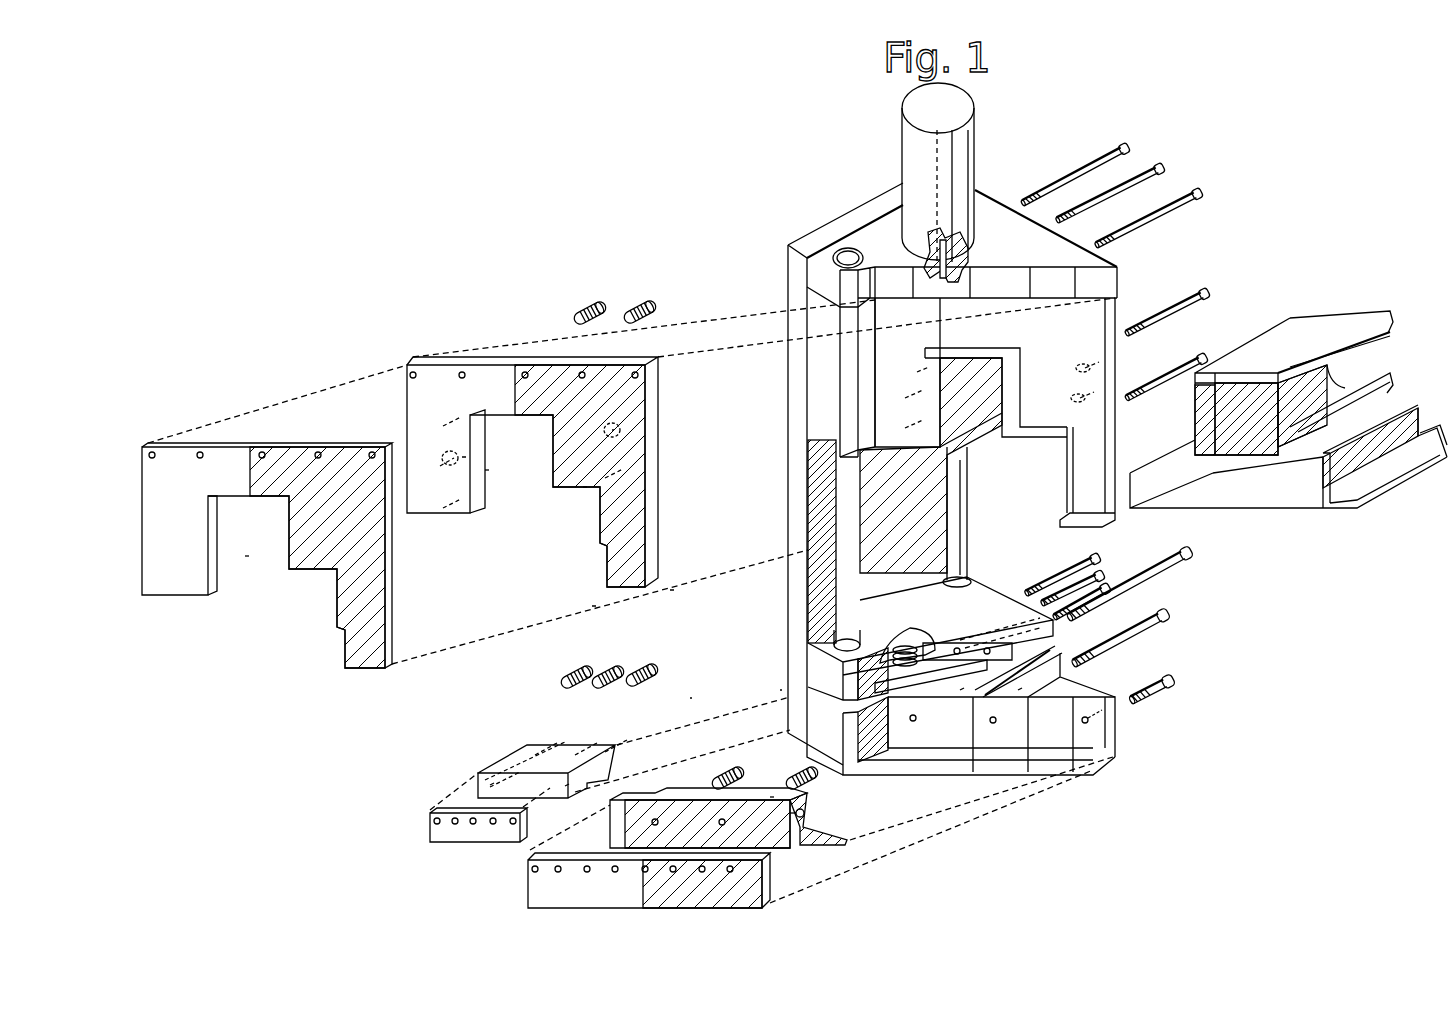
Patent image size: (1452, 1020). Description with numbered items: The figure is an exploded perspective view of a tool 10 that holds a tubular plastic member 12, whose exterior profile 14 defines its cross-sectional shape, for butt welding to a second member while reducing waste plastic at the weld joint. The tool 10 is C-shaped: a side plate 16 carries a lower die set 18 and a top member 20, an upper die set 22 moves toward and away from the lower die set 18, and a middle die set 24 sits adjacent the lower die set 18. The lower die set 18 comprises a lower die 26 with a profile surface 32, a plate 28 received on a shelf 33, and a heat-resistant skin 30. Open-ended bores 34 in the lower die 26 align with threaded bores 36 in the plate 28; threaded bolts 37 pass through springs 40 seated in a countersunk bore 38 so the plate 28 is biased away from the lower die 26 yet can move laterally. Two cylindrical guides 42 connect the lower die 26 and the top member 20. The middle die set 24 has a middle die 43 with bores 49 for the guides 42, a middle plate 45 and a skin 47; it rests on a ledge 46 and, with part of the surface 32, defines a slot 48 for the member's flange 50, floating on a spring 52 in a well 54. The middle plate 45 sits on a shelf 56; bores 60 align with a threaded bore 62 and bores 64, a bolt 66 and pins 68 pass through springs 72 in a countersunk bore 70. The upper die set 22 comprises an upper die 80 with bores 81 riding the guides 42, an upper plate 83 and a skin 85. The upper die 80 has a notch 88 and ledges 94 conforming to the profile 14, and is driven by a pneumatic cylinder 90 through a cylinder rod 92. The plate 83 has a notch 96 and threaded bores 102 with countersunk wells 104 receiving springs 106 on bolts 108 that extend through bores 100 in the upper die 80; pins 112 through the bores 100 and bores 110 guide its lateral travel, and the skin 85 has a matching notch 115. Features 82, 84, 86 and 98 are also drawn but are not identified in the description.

The tool 10 is at (657, 250).
The plastic member 12 is at (1300, 500).
The exterior profile 14 is at (1195, 428).
The side plate 16 is at (790, 595).
The lower die set 18 is at (689, 698).
The top member 20 is at (890, 230).
The upper die set 22 is at (593, 606).
The middle die set 24 is at (779, 690).
The lower die 26 is at (1113, 763).
The plate 28 is at (850, 842).
The skin 30 is at (765, 888).
The profile surface 32 is at (1062, 685).
The shelf 33 is at (1118, 738).
The open-ended bores 34 is at (1085, 724).
The threaded bores 36 is at (722, 818).
The threaded bolts 37 is at (1183, 557).
The countersunk bore 38 is at (770, 782).
The spring 40 is at (726, 772).
The elongate guides 42 is at (958, 575).
The middle die 43 is at (920, 600).
The middle plate 45 is at (598, 770).
The ledge 46 is at (962, 690).
The skin 47 is at (462, 832).
The slot 48 is at (1045, 640).
The bores 49 is at (958, 578).
The laterally extending flange 50 is at (1180, 505).
The spring 52 is at (907, 638).
The well 54 is at (845, 656).
The shelf 56 is at (1020, 690).
The open-ended bores 60 is at (992, 598).
The threaded bore 62 is at (521, 760).
The bores 64 is at (490, 770).
The bolt 66 is at (1097, 575).
The pins 68 is at (1090, 558).
The countersunk bore 70 is at (605, 748).
The spring 72 is at (577, 670).
The upper die 80 is at (884, 334).
The bores 81 is at (940, 400).
The ram body 82 is at (972, 462).
The upper plate 83 is at (498, 375).
The foot 84 is at (1113, 520).
The skin 85 is at (170, 514).
The ram block 86 is at (868, 452).
The notch 88 is at (1004, 446).
The pneumatic cylinder 90 is at (958, 100).
The cylinder rod 92 is at (970, 250).
The ledge 94 is at (1005, 350).
The notch 96 is at (493, 470).
The notch 98 is at (585, 490).
The open-ended bores 100 is at (926, 395).
The threaded bores 102 is at (448, 455).
The countersunk well 104 is at (614, 424).
The spring 106 is at (645, 306).
The bolt 108 is at (1143, 165).
The bores 110 is at (452, 420).
The pins 112 is at (1108, 142).
The notch 115 is at (246, 557).